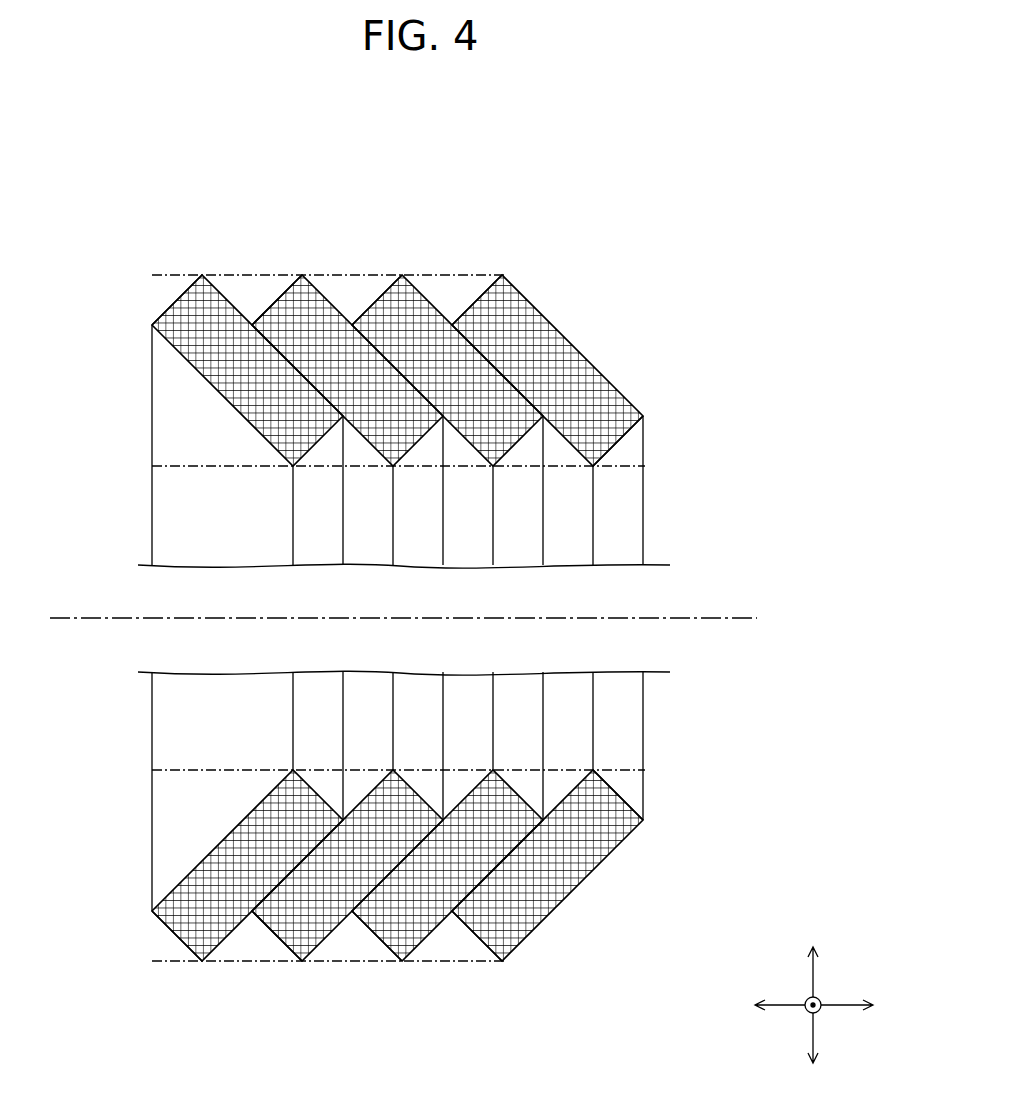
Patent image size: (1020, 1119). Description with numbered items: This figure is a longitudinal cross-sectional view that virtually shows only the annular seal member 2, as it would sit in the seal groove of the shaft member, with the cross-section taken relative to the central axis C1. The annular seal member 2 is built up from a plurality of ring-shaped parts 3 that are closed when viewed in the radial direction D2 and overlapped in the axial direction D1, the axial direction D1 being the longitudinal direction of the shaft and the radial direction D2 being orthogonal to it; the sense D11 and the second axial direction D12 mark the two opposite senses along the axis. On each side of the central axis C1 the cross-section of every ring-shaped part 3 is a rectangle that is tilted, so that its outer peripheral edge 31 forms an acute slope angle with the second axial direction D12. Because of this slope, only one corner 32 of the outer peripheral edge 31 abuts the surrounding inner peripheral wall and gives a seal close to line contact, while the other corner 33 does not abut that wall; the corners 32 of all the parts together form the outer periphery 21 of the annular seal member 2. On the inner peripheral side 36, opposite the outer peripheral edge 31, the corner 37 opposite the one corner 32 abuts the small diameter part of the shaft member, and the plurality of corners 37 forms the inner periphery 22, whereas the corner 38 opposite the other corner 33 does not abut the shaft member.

The annular seal member 2 is at (42, 190).
The ring-shaped part 3 is at (225, 381).
The outer periphery 21 is at (472, 275).
The inner periphery 22 is at (524, 468).
The outer peripheral edge 31 is at (180, 297).
The one corner 32 is at (202, 275).
The other corner 33 is at (152, 325).
The inner peripheral side 36 is at (622, 443).
The corner 37 is at (293, 467).
The corner 38 is at (643, 416).
The central axis C1 is at (738, 620).
The axial direction D1 is at (835, 1008).
The radial direction D2 is at (813, 985).
The first direction side D11 is at (896, 1004).
The second axial direction D12 is at (727, 1004).